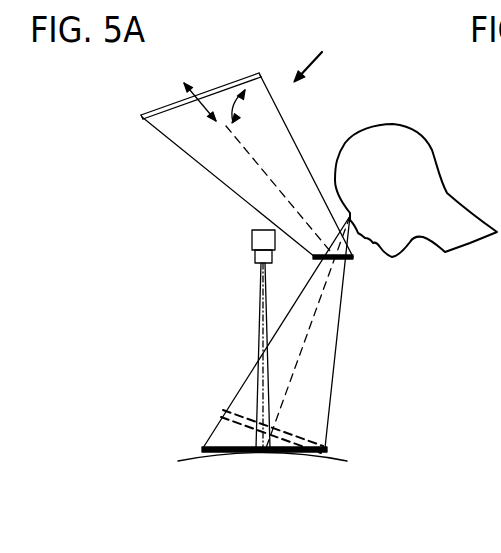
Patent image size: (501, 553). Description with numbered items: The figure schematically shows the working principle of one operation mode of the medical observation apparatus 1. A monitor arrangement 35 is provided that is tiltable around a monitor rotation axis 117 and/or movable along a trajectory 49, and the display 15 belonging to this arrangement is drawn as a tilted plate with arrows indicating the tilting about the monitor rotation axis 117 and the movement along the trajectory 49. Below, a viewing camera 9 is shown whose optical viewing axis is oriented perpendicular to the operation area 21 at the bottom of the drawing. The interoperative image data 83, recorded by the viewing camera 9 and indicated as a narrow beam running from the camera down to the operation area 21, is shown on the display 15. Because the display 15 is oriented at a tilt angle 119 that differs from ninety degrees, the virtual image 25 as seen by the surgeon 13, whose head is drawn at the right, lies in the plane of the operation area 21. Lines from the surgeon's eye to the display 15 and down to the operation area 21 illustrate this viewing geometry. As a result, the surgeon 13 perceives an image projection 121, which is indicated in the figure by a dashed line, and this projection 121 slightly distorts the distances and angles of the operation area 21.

The medical observation apparatus 1 is at (315, 56).
The viewing camera 9 is at (258, 238).
The surgeon 13 is at (417, 140).
The display 15 is at (168, 104).
The operation area 21 is at (288, 432).
The virtual image 25 is at (233, 456).
The monitor arrangement 35 is at (240, 74).
The trajectory 49 is at (196, 108).
The interoperative image data 83 is at (254, 338).
The monitor rotation axis 117 is at (203, 88).
The tilt angle 119 is at (250, 114).
The image projection 121 is at (240, 422).